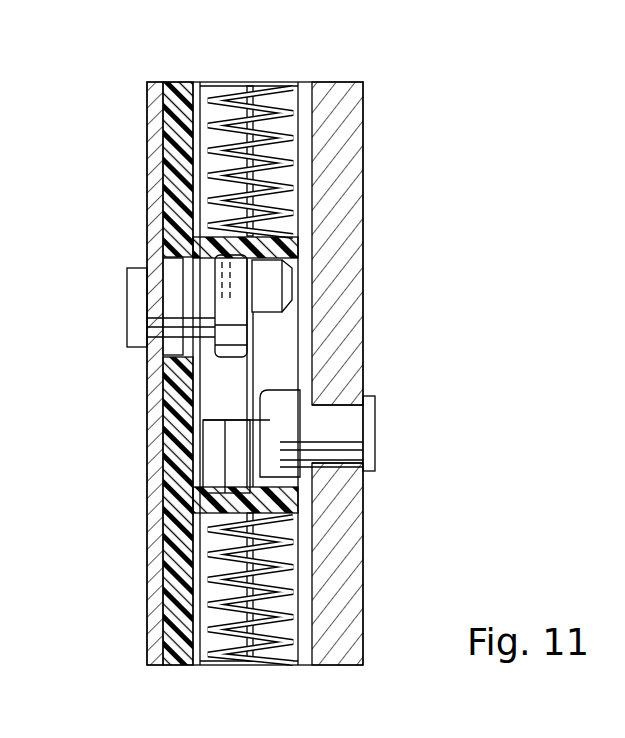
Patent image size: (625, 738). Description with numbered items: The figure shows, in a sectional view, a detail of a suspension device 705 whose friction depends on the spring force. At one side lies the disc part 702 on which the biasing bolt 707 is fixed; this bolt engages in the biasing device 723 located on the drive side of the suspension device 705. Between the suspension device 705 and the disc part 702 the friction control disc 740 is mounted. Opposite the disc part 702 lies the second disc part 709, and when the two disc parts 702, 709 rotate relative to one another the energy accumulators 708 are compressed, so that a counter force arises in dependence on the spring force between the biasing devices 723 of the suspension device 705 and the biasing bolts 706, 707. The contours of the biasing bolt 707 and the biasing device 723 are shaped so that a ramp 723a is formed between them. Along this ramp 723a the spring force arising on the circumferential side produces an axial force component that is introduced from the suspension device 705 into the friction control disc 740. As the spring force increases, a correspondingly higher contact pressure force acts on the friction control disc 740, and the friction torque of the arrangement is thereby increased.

The suspension device 705 is at (438, 71).
The disc part 702 is at (155, 400).
The friction control disc 740 is at (183, 193).
The disc part 709 is at (353, 357).
The energy accumulator 708 is at (278, 160).
The ramp 723a is at (195, 249).
The biasing device 723 is at (297, 263).
The biasing bolt 707 is at (173, 308).
The biasing bolt 706 is at (372, 416).